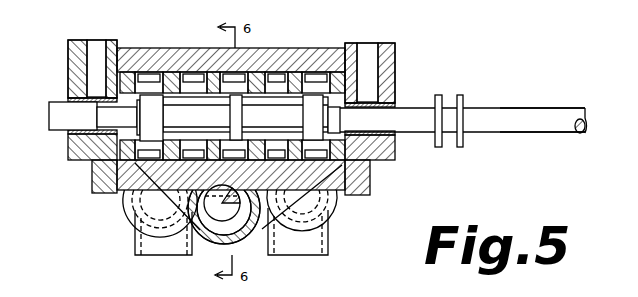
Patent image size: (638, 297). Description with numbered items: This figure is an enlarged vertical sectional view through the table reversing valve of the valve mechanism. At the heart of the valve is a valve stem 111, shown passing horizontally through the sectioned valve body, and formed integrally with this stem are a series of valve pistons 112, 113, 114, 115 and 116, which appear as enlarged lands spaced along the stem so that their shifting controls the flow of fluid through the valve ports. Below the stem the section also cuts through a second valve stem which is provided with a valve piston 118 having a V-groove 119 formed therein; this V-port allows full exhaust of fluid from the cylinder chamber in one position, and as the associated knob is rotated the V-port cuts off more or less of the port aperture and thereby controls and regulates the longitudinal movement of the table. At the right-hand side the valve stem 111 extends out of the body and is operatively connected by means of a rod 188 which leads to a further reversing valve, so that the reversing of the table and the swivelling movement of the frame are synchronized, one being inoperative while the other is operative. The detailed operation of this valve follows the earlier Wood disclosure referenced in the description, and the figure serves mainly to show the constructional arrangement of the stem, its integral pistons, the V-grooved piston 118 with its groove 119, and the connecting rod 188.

The valve stem 111 is at (410, 112).
The valve piston 112 is at (60, 106).
The valve piston 113 is at (155, 97).
The valve piston 114 is at (233, 94).
The valve piston 115 is at (312, 100).
The valve piston 116 is at (396, 125).
The valve piston 118 is at (247, 240).
The V-groove 119 is at (246, 192).
The rod 188 is at (540, 128).